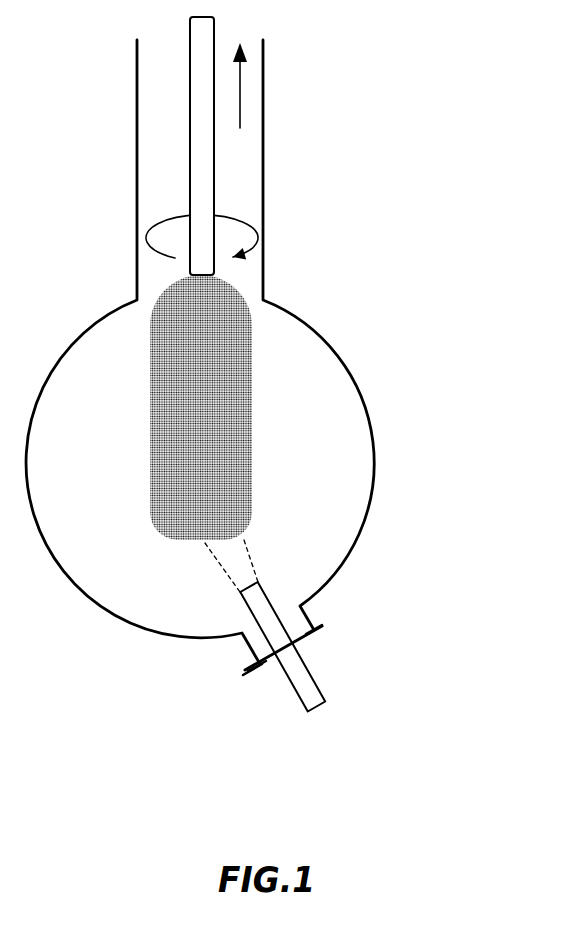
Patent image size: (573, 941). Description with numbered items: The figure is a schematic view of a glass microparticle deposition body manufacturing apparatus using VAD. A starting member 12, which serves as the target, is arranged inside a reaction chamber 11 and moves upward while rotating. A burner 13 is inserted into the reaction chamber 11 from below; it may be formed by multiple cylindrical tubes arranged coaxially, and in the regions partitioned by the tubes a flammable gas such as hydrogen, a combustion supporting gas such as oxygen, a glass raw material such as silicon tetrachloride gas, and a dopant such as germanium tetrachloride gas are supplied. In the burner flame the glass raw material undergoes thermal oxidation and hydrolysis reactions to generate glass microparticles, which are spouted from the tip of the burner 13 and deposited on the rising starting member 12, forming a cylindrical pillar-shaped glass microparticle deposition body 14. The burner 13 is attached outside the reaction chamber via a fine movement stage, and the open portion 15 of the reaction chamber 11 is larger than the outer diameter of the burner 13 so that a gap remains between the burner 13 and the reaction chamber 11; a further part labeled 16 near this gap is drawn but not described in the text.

The reaction chamber 11 is at (375, 467).
The starting member 12 is at (215, 180).
The burner 13 is at (308, 682).
The glass microparticle deposition body 14 is at (252, 356).
The open portion 15 is at (305, 610).
The seal 16 is at (265, 667).